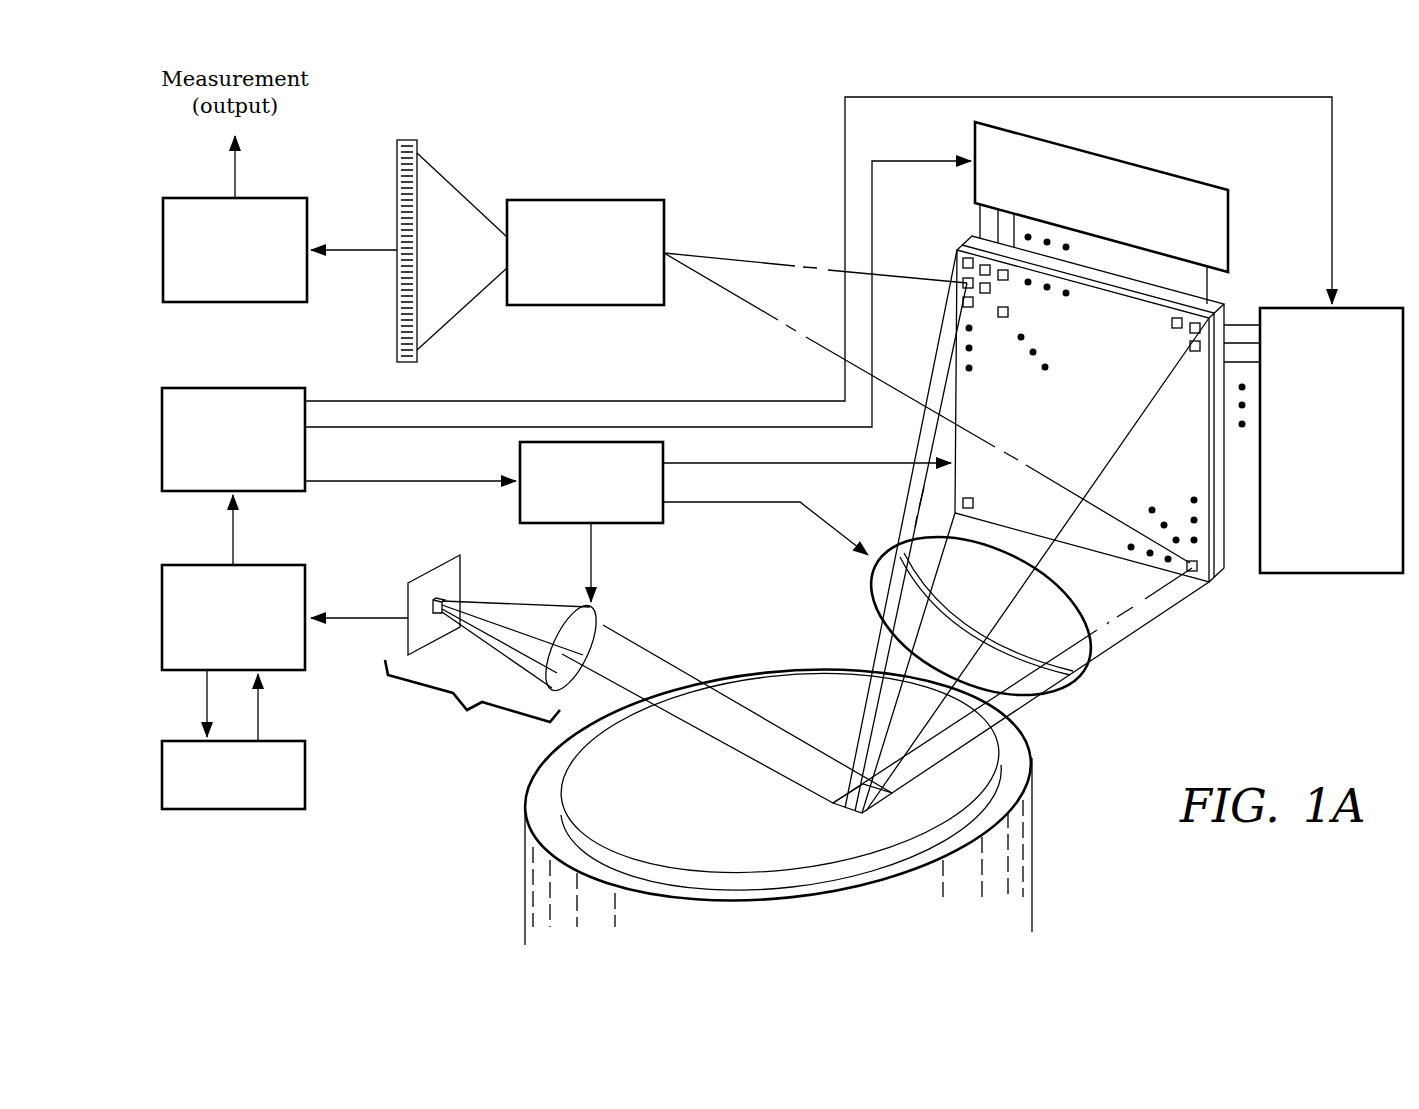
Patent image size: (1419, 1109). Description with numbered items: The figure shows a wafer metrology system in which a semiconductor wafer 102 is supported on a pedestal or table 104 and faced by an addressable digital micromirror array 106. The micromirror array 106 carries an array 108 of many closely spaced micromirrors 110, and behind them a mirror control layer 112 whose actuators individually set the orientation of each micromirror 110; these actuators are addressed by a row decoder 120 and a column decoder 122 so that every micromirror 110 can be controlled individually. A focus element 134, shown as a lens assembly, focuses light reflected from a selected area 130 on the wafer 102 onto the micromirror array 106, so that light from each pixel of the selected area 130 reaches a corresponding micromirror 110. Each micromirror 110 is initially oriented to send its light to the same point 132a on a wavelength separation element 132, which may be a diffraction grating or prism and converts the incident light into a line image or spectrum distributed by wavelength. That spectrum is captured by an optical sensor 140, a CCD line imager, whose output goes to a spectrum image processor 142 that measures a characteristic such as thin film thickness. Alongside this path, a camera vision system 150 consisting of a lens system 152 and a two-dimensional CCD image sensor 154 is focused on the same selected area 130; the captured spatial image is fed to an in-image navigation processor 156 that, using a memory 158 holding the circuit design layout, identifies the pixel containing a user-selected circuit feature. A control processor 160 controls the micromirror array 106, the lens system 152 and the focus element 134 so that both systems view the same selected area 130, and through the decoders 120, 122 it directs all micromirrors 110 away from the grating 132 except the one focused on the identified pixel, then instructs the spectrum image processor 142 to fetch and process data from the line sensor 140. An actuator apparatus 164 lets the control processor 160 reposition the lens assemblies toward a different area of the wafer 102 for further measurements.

The semiconductor wafer 102 is at (578, 793).
The pedestal or table 104 is at (525, 887).
The addressable digital micromirror array 106 is at (1051, 524).
The array of micromirrors 108 is at (1207, 465).
The micromirror 110 is at (1175, 325).
The mirror control layer 112 is at (1226, 500).
The row decoder 120 is at (1295, 313).
The column decoder 122 is at (1205, 196).
The selected area 130 is at (840, 816).
The wavelength separation element 132 is at (565, 207).
The point on the grating 132a is at (674, 246).
The focus element 134 is at (868, 568).
The optical sensor 140 is at (408, 140).
The spectrum image processor 142 is at (178, 206).
The camera vision system 150 is at (601, 658).
The lens system 152 is at (602, 608).
The two-dimensional CCD image sensor 154 is at (422, 587).
The in-image navigation processor 156 is at (178, 572).
The memory 158 is at (178, 748).
The control processor 160 is at (178, 395).
The actuator apparatus 164 is at (536, 510).